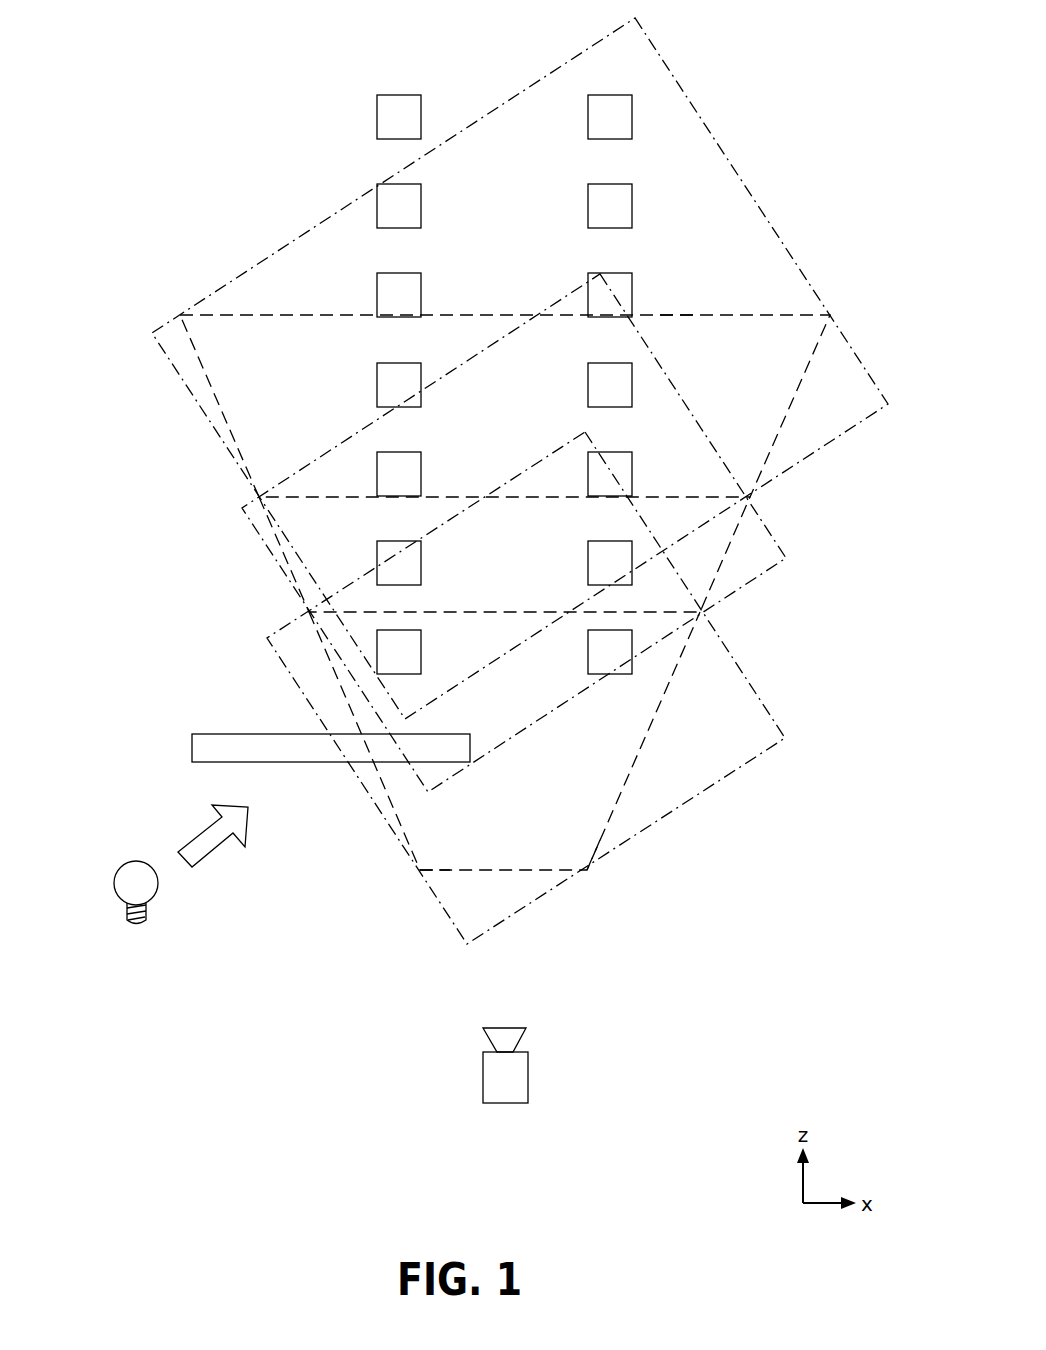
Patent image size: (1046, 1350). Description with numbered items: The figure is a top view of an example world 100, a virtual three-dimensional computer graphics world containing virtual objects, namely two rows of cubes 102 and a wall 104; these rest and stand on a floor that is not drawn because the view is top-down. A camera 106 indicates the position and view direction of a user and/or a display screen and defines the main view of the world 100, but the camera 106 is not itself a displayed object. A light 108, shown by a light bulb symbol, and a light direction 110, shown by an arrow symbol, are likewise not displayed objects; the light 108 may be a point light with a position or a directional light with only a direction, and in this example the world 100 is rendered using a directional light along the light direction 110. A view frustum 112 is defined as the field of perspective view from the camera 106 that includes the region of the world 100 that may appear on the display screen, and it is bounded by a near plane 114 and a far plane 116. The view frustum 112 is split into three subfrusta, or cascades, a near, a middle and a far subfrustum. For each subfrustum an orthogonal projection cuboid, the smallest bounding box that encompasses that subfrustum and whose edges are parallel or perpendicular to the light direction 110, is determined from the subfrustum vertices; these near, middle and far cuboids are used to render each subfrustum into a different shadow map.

The world 100 is at (158, 24).
The cubes 102 is at (378, 133).
The wall 104 is at (203, 734).
The camera 106 is at (483, 1100).
The light 108 is at (116, 890).
The light direction 110 is at (196, 836).
The view frustum 112 is at (598, 858).
The near plane 114 is at (460, 872).
The far plane 116 is at (681, 313).